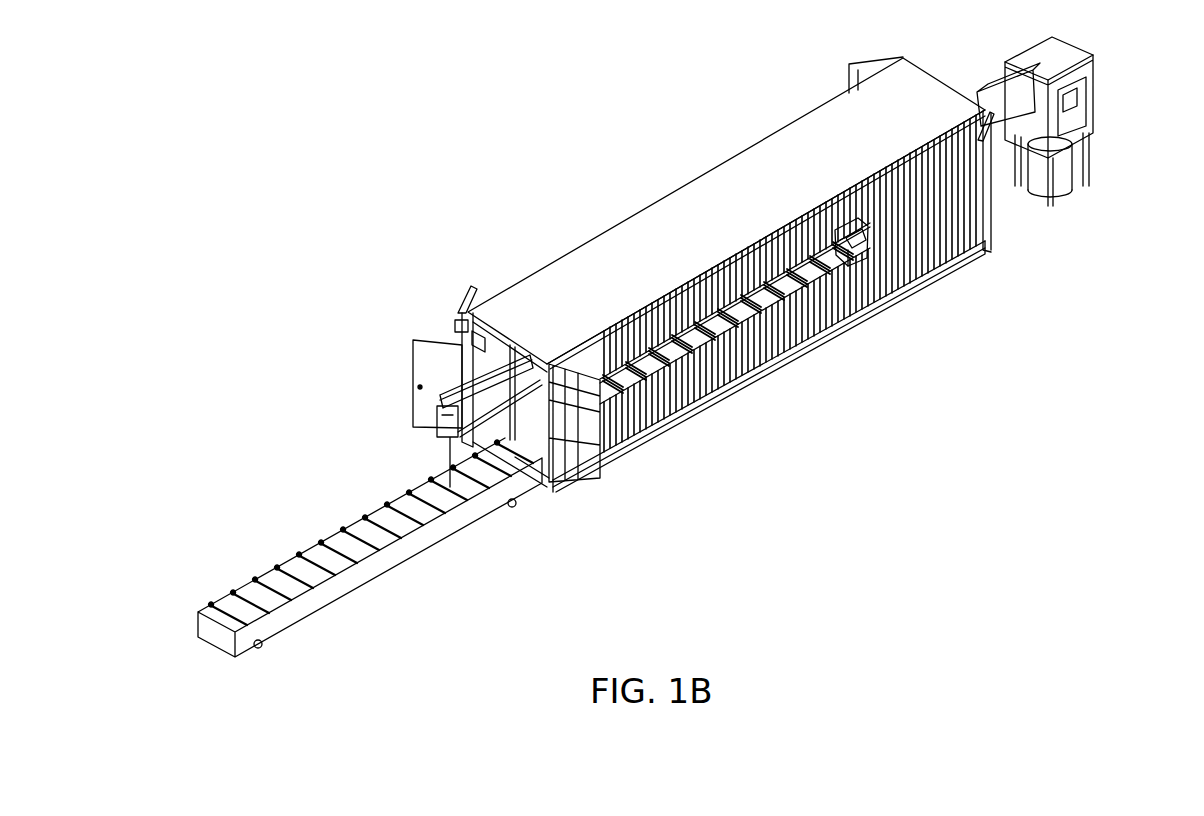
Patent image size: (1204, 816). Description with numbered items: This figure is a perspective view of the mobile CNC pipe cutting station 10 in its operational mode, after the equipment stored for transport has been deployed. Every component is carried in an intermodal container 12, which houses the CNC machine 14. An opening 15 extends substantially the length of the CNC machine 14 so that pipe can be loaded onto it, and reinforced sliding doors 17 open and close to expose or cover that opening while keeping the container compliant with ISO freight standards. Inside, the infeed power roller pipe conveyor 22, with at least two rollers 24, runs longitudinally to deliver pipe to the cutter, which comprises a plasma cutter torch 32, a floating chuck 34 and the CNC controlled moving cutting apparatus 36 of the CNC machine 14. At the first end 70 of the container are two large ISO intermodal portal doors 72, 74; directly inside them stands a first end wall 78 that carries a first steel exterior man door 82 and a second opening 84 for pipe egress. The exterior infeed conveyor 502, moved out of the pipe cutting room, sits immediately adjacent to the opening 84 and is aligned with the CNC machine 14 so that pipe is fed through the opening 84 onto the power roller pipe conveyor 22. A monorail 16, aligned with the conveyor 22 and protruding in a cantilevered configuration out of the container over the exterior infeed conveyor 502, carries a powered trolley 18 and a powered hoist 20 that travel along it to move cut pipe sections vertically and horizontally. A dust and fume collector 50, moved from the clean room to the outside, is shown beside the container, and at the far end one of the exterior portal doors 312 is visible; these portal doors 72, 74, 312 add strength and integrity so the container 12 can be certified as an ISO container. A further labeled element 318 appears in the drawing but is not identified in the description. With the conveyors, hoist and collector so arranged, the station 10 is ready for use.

The mobile CNC pipe cutting station 10 is at (405, 190).
The intermodal container 12 is at (652, 200).
The CNC machine 14 is at (883, 293).
The opening 15 is at (768, 235).
The monorail 16 is at (460, 363).
The sliding doors 17 is at (757, 360).
The powered trolley 18 is at (438, 410).
The powered hoist 20 is at (432, 427).
The power roller pipe conveyor 22 is at (692, 410).
The rollers 24 is at (660, 423).
The plasma cutter torch 32 is at (818, 341).
The floating chuck 34 is at (867, 277).
The CNC controlled moving cutting apparatus 36 is at (828, 330).
The dust and fume collector 50 is at (1092, 85).
The first end 70 is at (300, 498).
The ISO intermodal portal door 72 is at (463, 298).
The ISO intermodal portal door 74 is at (580, 478).
The first end wall 78 is at (460, 333).
The first steel exterior man door 82 is at (413, 363).
The second opening 84 is at (528, 407).
The exterior intermodal container portal door 312 is at (858, 247).
The front frame post 318 is at (458, 327).
The exterior infeed conveyor 502 is at (400, 567).